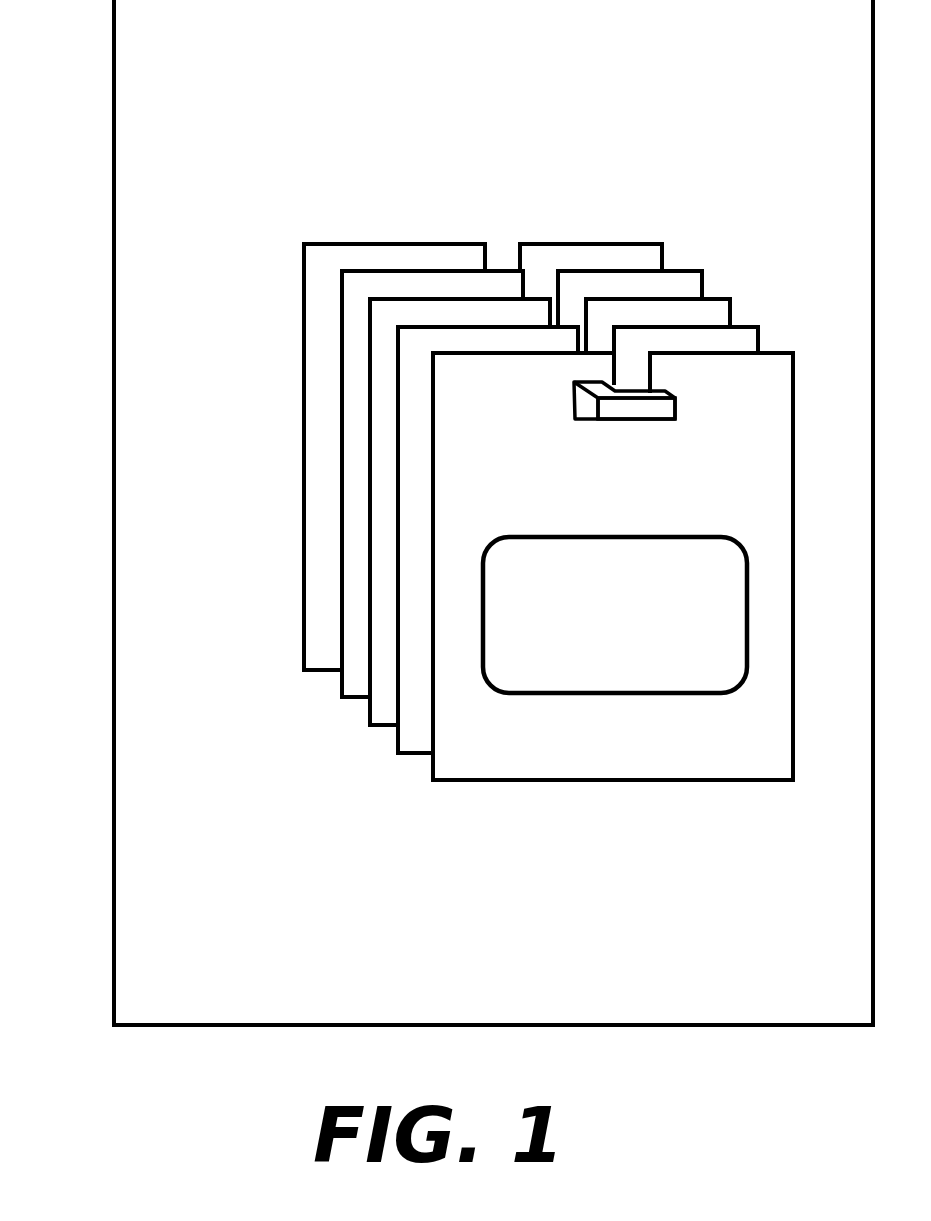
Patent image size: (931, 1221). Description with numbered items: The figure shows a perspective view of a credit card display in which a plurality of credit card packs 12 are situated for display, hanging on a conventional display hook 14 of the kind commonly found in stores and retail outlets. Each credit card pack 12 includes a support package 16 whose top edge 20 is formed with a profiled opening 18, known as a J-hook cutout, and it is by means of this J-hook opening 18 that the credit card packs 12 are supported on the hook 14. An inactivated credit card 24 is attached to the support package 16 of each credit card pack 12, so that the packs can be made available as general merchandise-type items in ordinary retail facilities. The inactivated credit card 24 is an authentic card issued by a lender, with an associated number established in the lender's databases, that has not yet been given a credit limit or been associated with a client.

The credit card pack 12 is at (413, 551).
The display hook 14 is at (623, 425).
The support package 16 is at (581, 606).
The profiled opening 18 is at (662, 407).
The top edge 20 is at (562, 355).
The inactivated credit card 24 is at (595, 648).